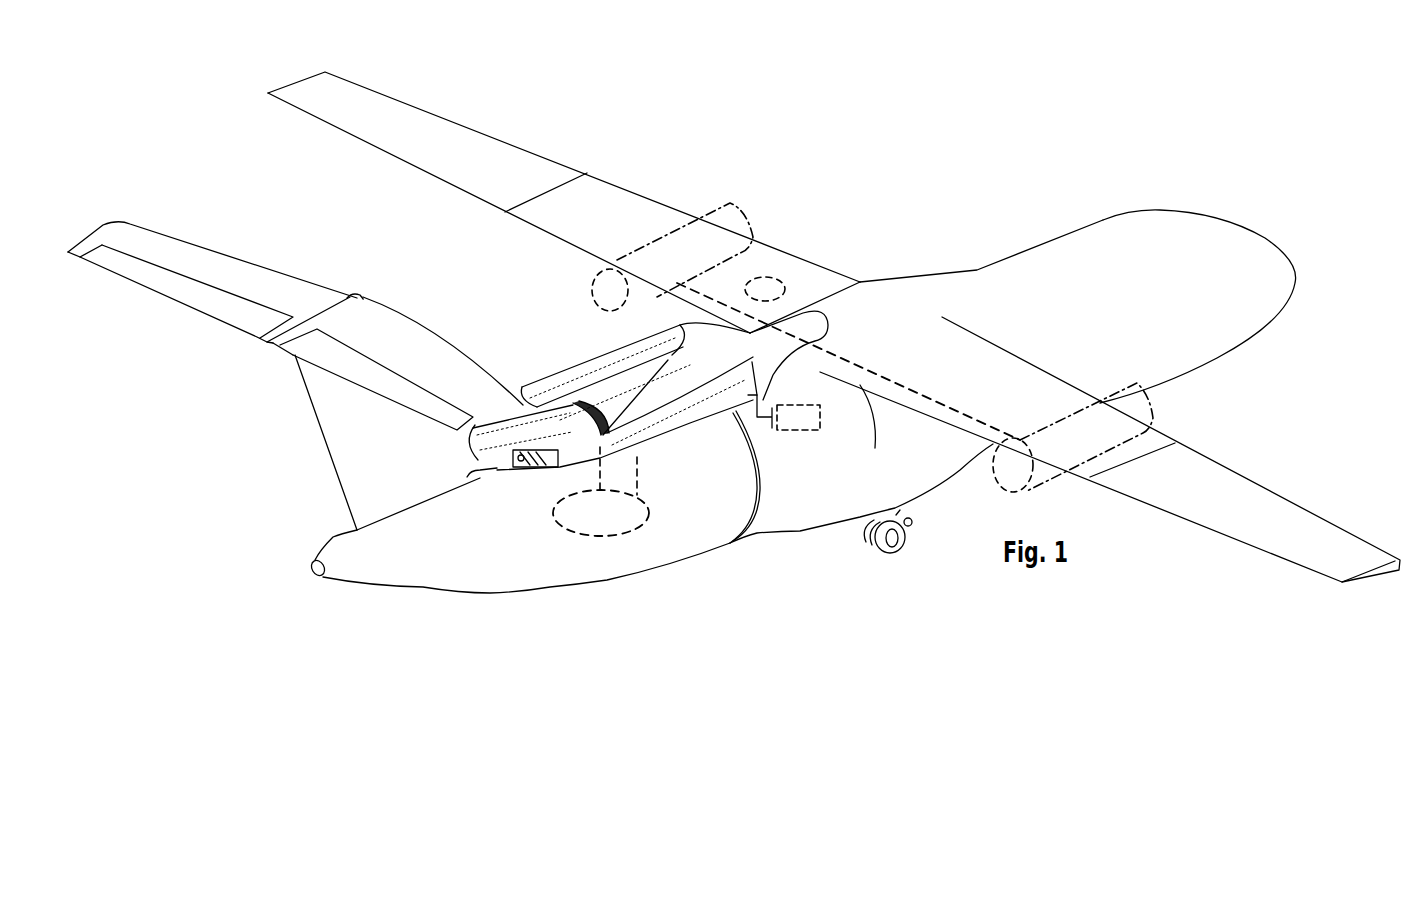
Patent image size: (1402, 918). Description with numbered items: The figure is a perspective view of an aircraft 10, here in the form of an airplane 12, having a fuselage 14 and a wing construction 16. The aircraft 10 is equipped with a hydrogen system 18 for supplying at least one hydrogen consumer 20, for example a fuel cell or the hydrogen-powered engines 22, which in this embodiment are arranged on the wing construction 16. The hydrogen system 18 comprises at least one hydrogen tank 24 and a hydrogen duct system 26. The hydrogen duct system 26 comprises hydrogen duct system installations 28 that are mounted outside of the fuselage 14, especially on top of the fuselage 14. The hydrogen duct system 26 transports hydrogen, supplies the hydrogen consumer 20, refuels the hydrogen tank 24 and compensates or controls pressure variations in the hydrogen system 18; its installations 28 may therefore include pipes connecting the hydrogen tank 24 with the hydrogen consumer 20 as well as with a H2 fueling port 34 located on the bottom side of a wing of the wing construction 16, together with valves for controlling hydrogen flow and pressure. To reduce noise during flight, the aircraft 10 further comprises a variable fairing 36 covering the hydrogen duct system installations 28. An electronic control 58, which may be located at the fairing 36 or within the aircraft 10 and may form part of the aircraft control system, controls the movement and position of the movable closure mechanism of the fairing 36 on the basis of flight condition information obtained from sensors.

The aircraft 10 is at (1052, 210).
The airplane 12 is at (966, 242).
The fuselage 14 is at (720, 523).
The wing construction 16 is at (450, 140).
The hydrogen system 18 is at (596, 556).
The hydrogen consumer 20 is at (718, 202).
The hydrogen-powered engines 22 is at (598, 281).
The hydrogen tank 24 is at (637, 513).
The hydrogen duct system 26 is at (567, 403).
The hydrogen duct system installations 28 is at (586, 405).
The H2 fueling port 34 is at (768, 277).
The variable fairing 36 is at (567, 478).
The control 58 is at (797, 417).